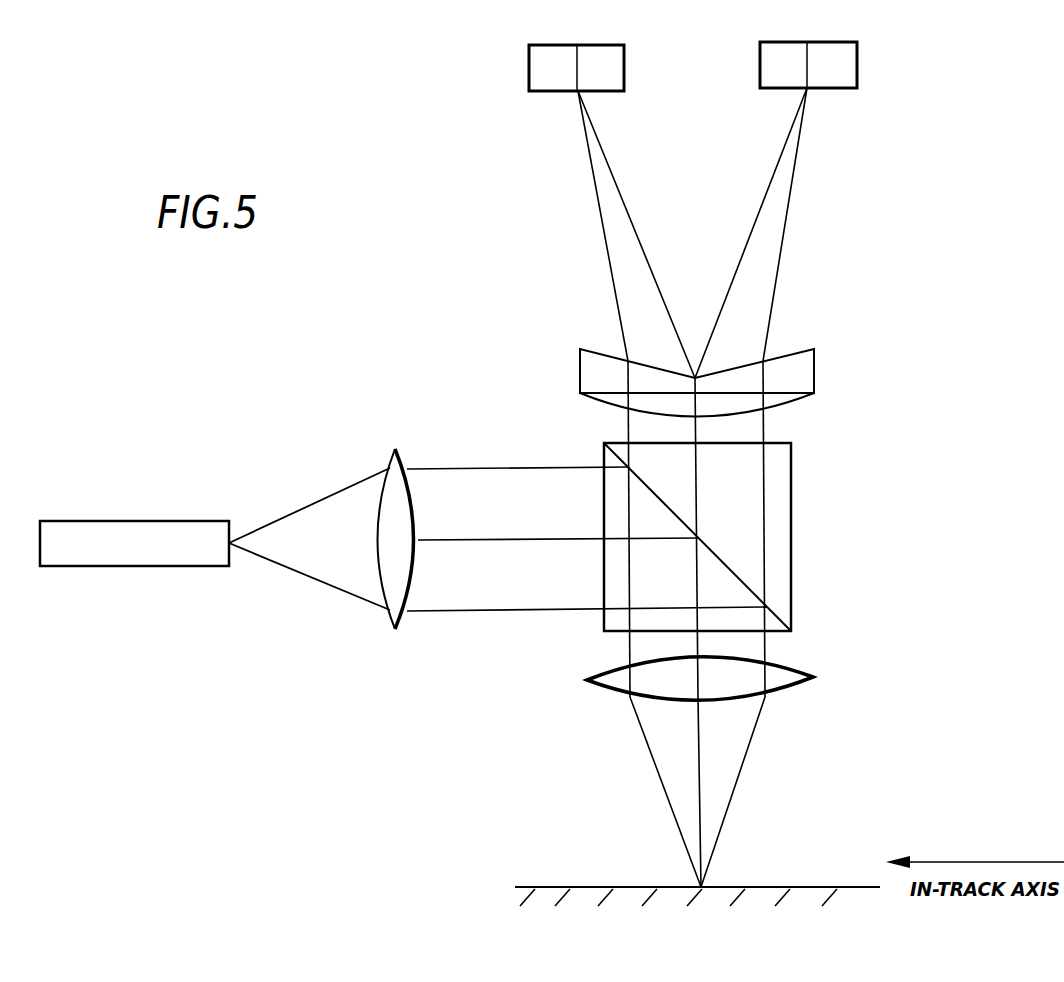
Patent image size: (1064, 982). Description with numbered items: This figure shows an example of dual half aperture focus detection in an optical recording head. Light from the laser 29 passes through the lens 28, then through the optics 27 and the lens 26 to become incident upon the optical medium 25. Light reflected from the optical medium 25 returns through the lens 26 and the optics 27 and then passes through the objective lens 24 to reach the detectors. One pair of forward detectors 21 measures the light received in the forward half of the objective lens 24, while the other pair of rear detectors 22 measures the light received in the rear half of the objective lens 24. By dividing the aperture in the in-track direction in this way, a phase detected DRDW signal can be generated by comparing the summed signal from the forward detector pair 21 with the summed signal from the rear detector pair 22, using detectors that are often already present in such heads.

The forward detectors 21 is at (512, 67).
The rear detectors 22 is at (858, 62).
The objective lens 24 is at (806, 364).
The optical medium 25 is at (766, 887).
The lens 26 is at (792, 670).
The optics 27 is at (793, 490).
The lens 28 is at (398, 465).
The laser 29 is at (188, 521).